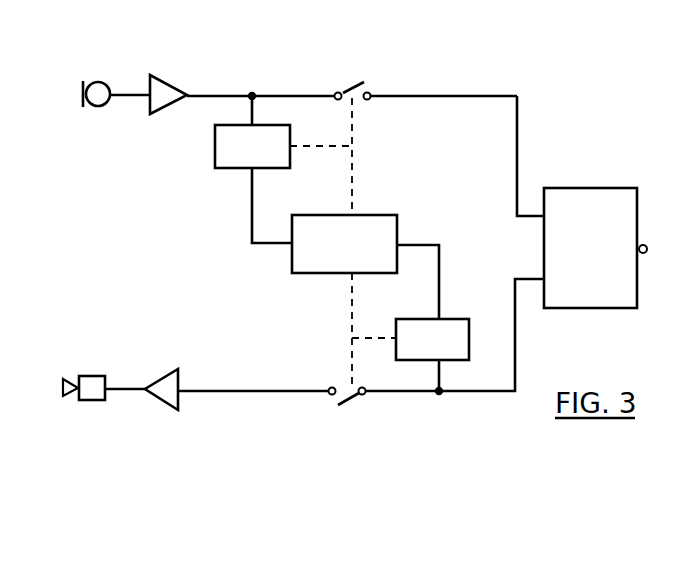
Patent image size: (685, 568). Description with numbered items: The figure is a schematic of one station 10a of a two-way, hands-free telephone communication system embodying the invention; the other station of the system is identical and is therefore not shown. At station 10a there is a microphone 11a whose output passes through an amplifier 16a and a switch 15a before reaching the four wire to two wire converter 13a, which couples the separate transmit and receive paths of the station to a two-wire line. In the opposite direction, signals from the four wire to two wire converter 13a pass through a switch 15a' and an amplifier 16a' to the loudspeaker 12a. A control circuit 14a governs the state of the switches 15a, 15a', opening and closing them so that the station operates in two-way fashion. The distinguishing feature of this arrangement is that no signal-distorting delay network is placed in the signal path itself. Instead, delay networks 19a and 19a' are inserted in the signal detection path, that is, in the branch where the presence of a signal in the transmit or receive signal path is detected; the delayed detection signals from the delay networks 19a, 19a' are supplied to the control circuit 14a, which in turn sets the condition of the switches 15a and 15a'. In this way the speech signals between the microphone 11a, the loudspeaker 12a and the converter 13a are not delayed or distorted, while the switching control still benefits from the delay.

The station 10a is at (428, 33).
The microphone 11a is at (97, 82).
The loudspeaker 12a is at (93, 376).
The four wire to two wire converter 13a is at (593, 188).
The control circuit 14a is at (292, 258).
The switch 15a is at (341, 71).
The switch 15a' is at (375, 407).
The amplifier 16a is at (179, 77).
The amplifier 16a' is at (188, 371).
The delay network 19a is at (228, 158).
The delay network 19a' is at (444, 317).